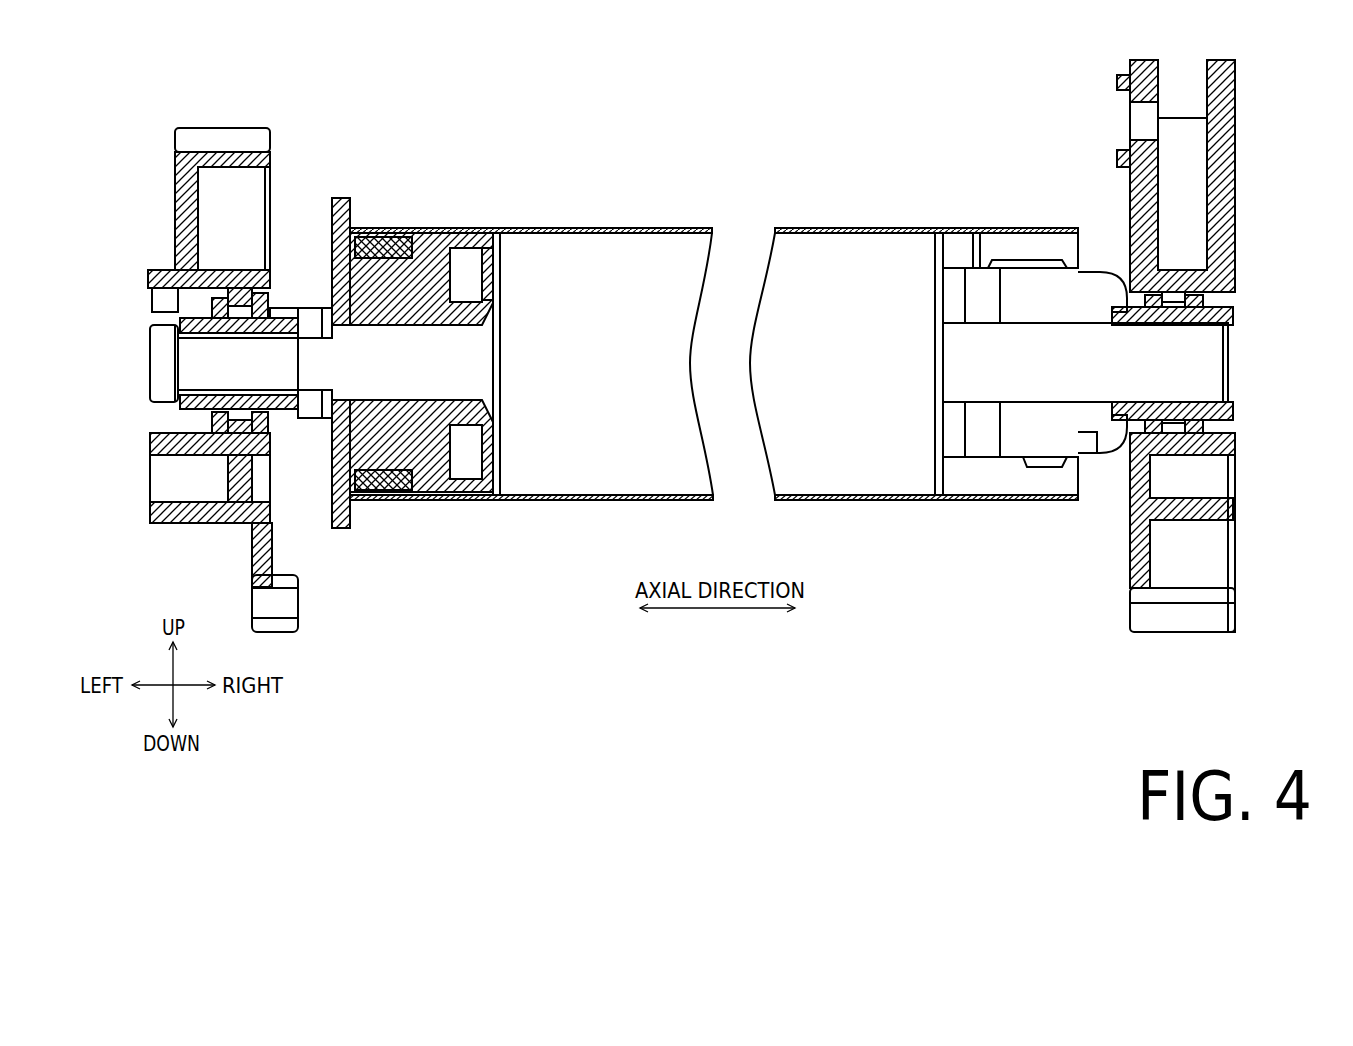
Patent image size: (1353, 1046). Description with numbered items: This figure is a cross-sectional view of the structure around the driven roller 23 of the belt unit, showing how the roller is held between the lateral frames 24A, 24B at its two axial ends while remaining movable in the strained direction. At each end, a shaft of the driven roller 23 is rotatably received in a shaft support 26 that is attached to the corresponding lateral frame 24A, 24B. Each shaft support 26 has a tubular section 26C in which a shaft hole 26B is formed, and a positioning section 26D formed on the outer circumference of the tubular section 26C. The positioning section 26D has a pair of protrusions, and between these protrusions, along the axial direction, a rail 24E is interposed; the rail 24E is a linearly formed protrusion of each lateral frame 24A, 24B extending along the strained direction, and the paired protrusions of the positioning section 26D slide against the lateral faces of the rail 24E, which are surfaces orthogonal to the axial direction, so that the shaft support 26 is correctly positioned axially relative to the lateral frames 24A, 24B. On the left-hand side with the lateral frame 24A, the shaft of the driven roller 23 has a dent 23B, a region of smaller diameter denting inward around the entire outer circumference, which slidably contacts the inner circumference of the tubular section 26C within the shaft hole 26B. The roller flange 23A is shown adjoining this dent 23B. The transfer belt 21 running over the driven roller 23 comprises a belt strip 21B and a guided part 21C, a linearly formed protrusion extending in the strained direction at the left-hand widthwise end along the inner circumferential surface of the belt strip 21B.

The transfer belt 21 is at (714, 370).
The belt strip 21B is at (460, 229).
The guided part 21C is at (390, 235).
The driven roller 23 is at (714, 349).
The flange 23A is at (352, 290).
The dent 23B is at (335, 240).
The lateral frame 24A is at (175, 223).
The lateral frame 24B is at (1237, 176).
The rail 24E is at (300, 325).
The shaft support 26 is at (197, 315).
The shaft hole 26B is at (300, 358).
The tubular section 26C is at (268, 382).
The positioning section 26D is at (247, 278).